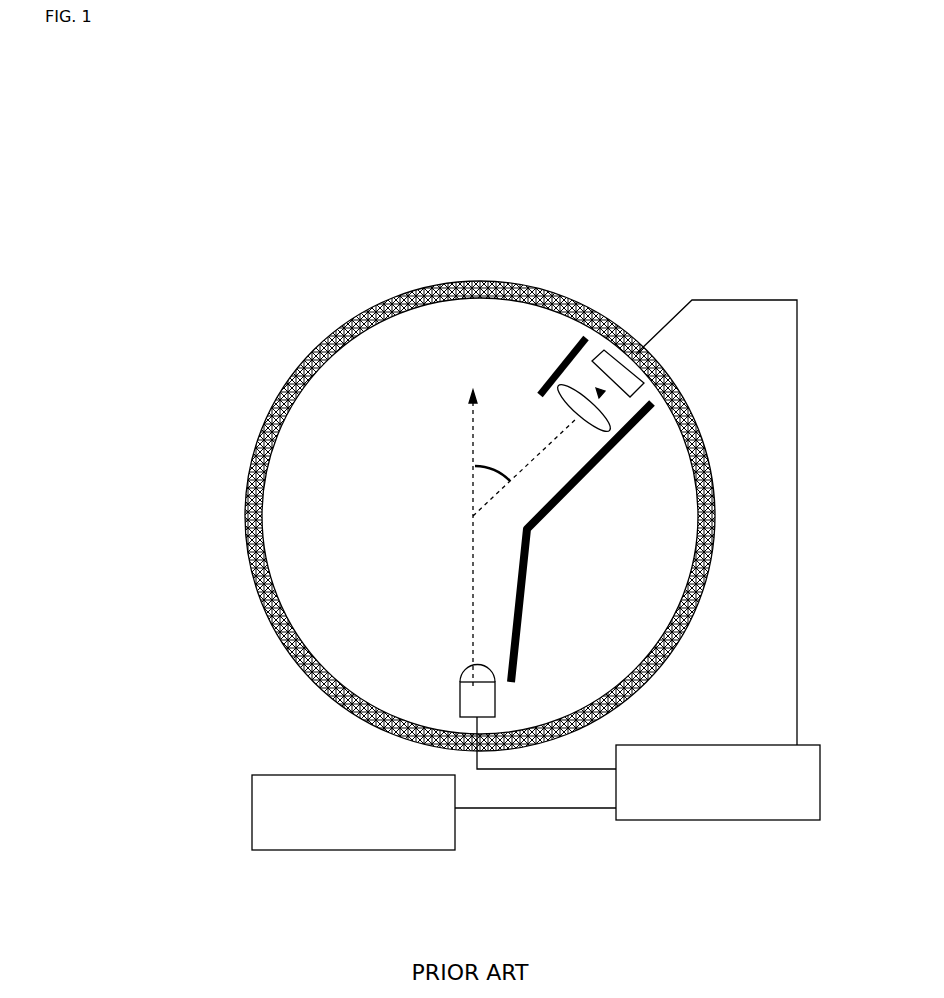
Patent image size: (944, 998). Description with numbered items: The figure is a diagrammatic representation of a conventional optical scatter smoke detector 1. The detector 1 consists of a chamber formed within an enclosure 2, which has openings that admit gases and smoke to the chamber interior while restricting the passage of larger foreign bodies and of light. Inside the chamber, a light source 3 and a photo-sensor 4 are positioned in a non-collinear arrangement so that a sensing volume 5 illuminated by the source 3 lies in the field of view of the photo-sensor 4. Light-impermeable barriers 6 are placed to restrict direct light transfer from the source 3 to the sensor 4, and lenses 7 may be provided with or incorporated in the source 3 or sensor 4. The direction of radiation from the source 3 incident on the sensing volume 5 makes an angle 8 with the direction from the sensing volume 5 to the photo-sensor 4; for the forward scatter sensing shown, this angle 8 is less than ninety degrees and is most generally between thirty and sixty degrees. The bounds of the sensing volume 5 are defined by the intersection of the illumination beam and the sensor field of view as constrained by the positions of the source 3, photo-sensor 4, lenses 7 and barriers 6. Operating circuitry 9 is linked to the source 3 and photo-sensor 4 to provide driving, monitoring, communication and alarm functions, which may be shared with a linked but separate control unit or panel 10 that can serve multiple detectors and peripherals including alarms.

The detector 1 is at (332, 309).
The enclosure 2 is at (294, 373).
The light source 3 is at (458, 680).
The photo-sensor 4 is at (616, 352).
The sensing volume 5 is at (468, 518).
The light-impermeable barriers 6 is at (567, 347).
The lenses 7 is at (580, 385).
The angle 8 is at (497, 467).
The operating circuitry 9 is at (718, 782).
The control unit or panel 10 is at (434, 812).